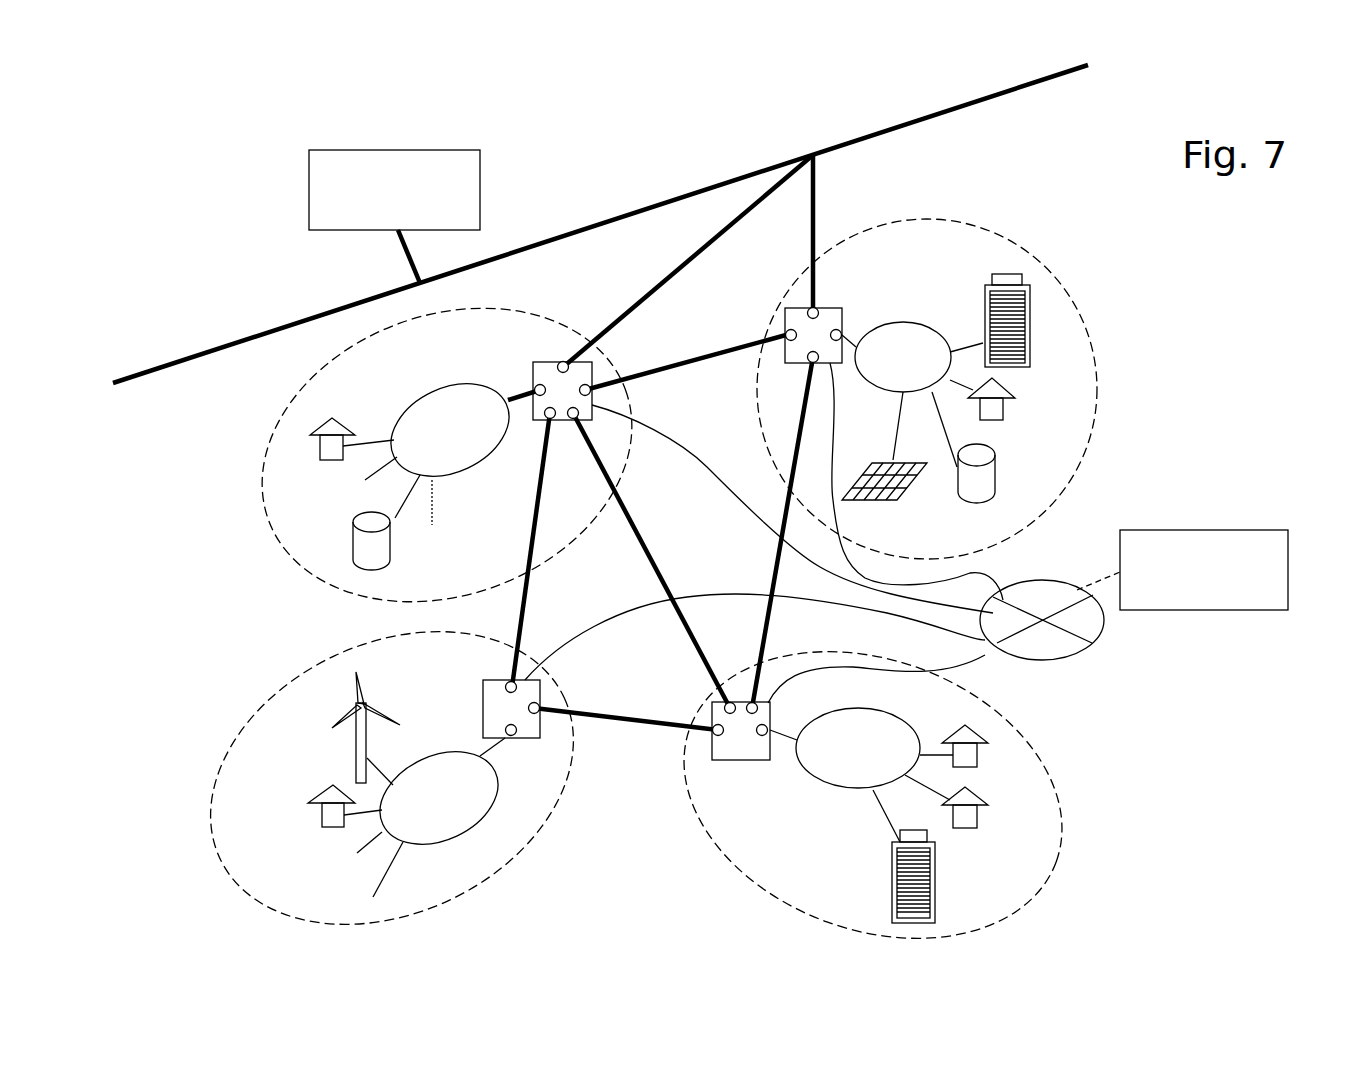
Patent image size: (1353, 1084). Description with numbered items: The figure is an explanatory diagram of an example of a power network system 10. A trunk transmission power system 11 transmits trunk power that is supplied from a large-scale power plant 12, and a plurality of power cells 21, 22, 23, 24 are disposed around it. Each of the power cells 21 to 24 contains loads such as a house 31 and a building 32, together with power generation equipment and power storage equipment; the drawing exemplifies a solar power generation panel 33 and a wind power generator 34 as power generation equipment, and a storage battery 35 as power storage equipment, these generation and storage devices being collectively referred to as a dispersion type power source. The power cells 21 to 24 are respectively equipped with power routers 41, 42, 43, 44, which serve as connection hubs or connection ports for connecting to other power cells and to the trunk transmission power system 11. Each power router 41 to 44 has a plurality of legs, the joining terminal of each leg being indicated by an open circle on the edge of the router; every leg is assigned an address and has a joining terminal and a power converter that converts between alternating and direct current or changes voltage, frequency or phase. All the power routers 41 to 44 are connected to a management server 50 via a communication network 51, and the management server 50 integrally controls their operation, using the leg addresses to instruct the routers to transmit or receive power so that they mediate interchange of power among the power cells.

The power network system 10 is at (188, 109).
The trunk transmission power system 11 is at (875, 133).
The large-scale power plant 12 is at (400, 150).
The power cell 21 is at (975, 222).
The power cell 22 is at (773, 890).
The power cell 23 is at (548, 303).
The power cell 24 is at (225, 885).
The house 31 is at (1005, 412).
The building 32 is at (1030, 345).
The solar power generation panel 33 is at (900, 500).
The wind power generator 34 is at (355, 753).
The storage battery 35 is at (998, 470).
The power router 41 is at (843, 310).
The power router 42 is at (752, 762).
The power router 43 is at (545, 420).
The power router 44 is at (483, 705).
The management server 50 is at (1210, 528).
The communication network 51 is at (1078, 655).